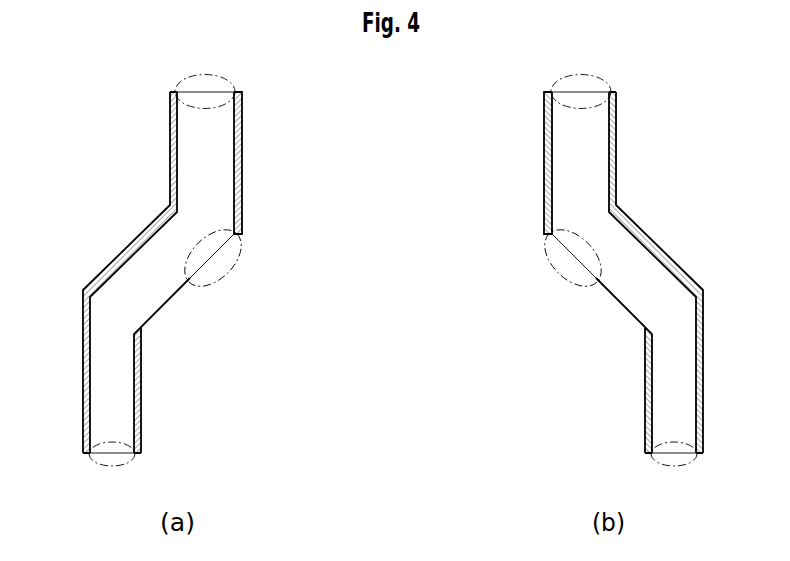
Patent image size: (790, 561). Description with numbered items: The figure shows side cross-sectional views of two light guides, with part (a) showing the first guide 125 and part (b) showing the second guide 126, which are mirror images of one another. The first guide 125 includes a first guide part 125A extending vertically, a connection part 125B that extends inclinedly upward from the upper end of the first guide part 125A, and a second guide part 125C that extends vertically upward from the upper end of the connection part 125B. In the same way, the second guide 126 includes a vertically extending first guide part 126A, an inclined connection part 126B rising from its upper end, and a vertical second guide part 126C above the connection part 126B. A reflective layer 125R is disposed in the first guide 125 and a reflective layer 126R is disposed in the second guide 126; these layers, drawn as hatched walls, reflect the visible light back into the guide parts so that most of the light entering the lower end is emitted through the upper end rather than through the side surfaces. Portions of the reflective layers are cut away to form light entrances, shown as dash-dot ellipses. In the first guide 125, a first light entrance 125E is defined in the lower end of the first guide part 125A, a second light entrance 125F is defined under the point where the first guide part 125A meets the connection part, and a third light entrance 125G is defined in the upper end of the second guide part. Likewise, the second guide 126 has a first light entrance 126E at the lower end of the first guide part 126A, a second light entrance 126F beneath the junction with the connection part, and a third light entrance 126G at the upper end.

The first guide 125 is at (245, 328).
The first guide part 125A is at (127, 392).
The connection part 125B is at (140, 258).
The second guide part 125C is at (225, 162).
The first light entrance 125E is at (114, 446).
The second light entrance 125F is at (225, 277).
The third light entrance 125G is at (207, 75).
The reflective layer 125R is at (170, 141).
The second guide 126 is at (591, 272).
The first guide part 126A is at (627, 365).
The connection part 126B is at (674, 251).
The second guide part 126C is at (512, 163).
The first light entrance 126E is at (633, 445).
The second light entrance 126F is at (541, 258).
The third light entrance 126G is at (545, 79).
The reflective layer 126R is at (658, 152).